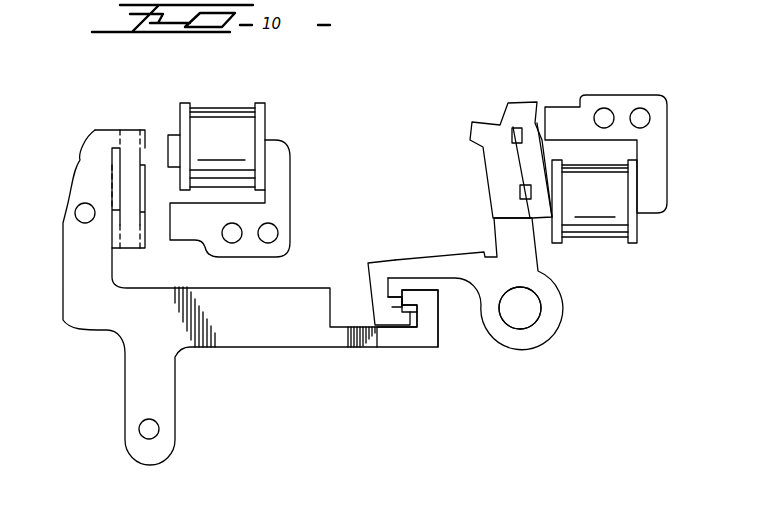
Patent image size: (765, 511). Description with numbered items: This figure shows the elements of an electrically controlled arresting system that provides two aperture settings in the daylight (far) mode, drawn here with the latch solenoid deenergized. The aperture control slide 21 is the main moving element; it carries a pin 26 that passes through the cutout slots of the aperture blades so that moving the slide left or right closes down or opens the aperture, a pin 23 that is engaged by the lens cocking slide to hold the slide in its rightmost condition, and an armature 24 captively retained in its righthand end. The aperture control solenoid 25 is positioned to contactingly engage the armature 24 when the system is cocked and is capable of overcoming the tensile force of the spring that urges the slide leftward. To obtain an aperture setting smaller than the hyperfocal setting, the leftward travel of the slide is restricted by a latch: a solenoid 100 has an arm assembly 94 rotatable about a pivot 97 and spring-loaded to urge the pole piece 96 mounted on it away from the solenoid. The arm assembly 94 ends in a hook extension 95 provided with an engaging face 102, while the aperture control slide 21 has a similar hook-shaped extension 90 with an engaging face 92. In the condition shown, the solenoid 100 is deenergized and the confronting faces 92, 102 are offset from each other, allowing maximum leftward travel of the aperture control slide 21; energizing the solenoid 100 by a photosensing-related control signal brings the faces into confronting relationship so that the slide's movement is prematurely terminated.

The aperture control slide 21 is at (250, 350).
The pin 23 is at (85, 215).
The armature 24 is at (145, 160).
The aperture control solenoid 25 is at (213, 120).
The pin 26 is at (150, 431).
The hook-shaped extension 90 is at (411, 348).
The engaging face 92 is at (390, 299).
The arm assembly 94 is at (484, 238).
The hook extension 95 is at (398, 263).
The pole piece 96 is at (523, 162).
The pivot 97 is at (528, 314).
The solenoid 100 is at (593, 243).
The engaging face 102 is at (416, 306).